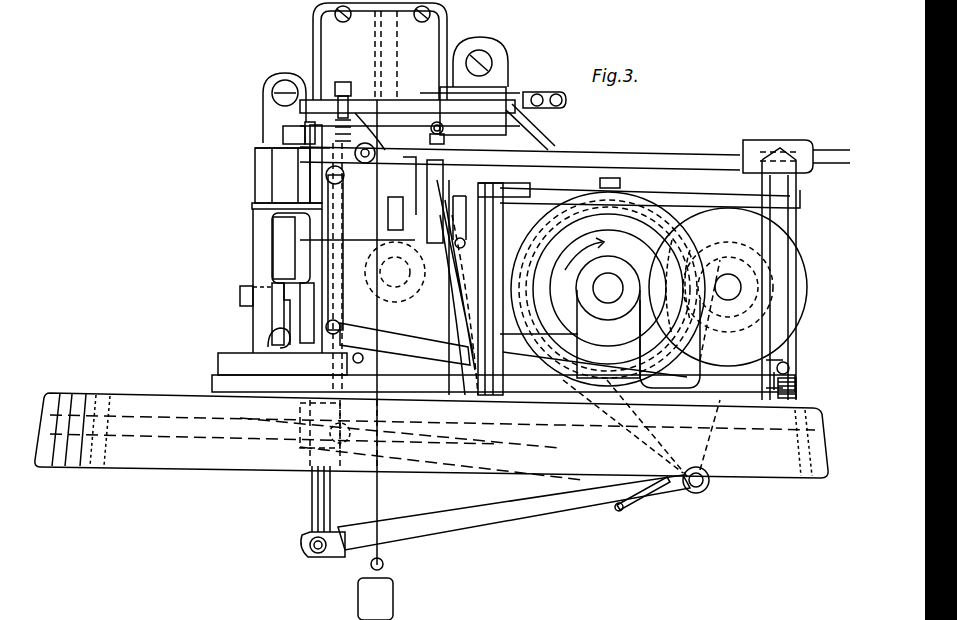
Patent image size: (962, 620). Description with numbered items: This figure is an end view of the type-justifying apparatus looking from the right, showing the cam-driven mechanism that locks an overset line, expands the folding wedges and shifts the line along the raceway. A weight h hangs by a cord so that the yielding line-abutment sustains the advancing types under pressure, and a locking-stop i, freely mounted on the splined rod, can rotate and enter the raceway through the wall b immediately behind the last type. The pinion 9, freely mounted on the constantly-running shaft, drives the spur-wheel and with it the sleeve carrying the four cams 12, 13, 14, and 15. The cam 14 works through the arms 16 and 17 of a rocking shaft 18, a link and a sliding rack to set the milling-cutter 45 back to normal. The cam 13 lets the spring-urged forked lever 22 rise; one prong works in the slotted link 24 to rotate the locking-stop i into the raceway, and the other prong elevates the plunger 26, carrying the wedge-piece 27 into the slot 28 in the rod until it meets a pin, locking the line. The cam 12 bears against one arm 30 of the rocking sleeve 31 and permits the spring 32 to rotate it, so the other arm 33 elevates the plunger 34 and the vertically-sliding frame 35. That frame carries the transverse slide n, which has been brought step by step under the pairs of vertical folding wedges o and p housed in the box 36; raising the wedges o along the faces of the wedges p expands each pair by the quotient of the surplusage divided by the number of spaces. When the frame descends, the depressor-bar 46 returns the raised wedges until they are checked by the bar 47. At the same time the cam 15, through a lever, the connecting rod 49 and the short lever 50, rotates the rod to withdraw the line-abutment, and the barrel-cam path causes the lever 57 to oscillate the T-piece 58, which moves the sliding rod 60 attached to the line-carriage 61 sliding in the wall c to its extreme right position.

The pinion 9 is at (350, 130).
The depressor-bar 46 is at (283, 118).
The locking-stop i is at (330, 138).
The folding wedge p is at (315, 150).
The slot 28 is at (345, 158).
The box 36 is at (273, 185).
The connecting rod 49 is at (335, 212).
The folding wedge o is at (291, 248).
The wedge-piece 27 is at (360, 240).
The bar 47 is at (250, 292).
The plunger 26 is at (350, 305).
The slide n is at (300, 322).
The vertically-sliding frame 35 is at (320, 350).
The wall b is at (355, 218).
The line-carriage 61 is at (447, 138).
The wall c is at (420, 276).
The short lever 50 is at (455, 215).
The slotted link 24 is at (395, 272).
The milling-cutter 45 is at (451, 305).
The forked lever 22 is at (466, 395).
The sliding rod 60 is at (603, 160).
The cam 13 is at (605, 205).
The cam 12 is at (655, 170).
The lever 57 is at (658, 198).
The T-piece 58 is at (797, 185).
The cam 14 is at (600, 255).
The cam 15 is at (608, 288).
The arm 16 is at (660, 420).
The arm 17 is at (470, 445).
The plunger 34 is at (323, 495).
The weight h is at (383, 582).
The arm 30 is at (605, 420).
The arm 33 is at (615, 497).
The spring 32 is at (640, 500).
The rocking sleeve 31 is at (703, 485).
The rocking shaft 18 is at (700, 495).